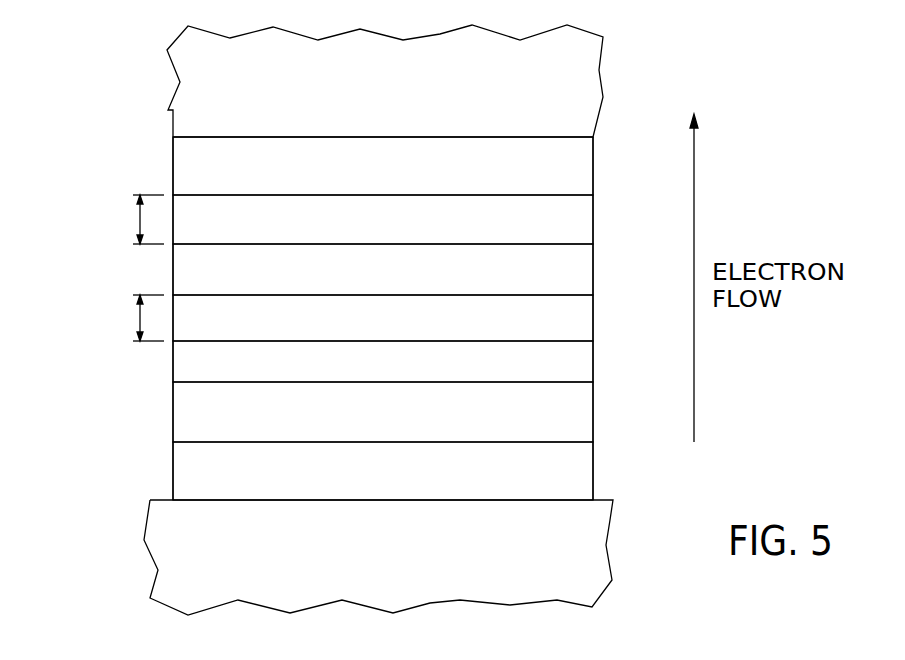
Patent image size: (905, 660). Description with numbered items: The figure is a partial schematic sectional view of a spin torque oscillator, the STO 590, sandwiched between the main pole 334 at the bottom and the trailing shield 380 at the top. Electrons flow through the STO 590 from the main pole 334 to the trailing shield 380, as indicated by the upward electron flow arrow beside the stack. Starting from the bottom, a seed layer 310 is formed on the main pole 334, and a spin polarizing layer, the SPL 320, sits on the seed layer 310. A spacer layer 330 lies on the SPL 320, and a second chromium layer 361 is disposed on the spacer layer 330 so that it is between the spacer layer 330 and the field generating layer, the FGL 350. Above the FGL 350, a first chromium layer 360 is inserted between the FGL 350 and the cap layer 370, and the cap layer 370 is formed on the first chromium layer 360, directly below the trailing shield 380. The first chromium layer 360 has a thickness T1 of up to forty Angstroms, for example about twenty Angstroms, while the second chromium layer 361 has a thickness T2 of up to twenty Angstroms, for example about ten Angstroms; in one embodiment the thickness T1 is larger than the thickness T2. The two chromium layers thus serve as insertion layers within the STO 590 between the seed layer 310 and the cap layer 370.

The STO 590 is at (140, 126).
The trailing shield 380 is at (585, 93).
The cap layer 370 is at (585, 173).
The first chromium layer 360 is at (585, 222).
The field generating layer (FGL) 350 is at (585, 282).
The second chromium layer 361 is at (585, 317).
The spacer layer 330 is at (585, 359).
The spin polarizing layer (SPL) 320 is at (587, 419).
The seed layer 310 is at (586, 478).
The main pole (MP) 334 is at (585, 566).
The thickness of the first chromium layer T1 is at (139, 222).
The thickness of the second chromium layer T2 is at (139, 317).